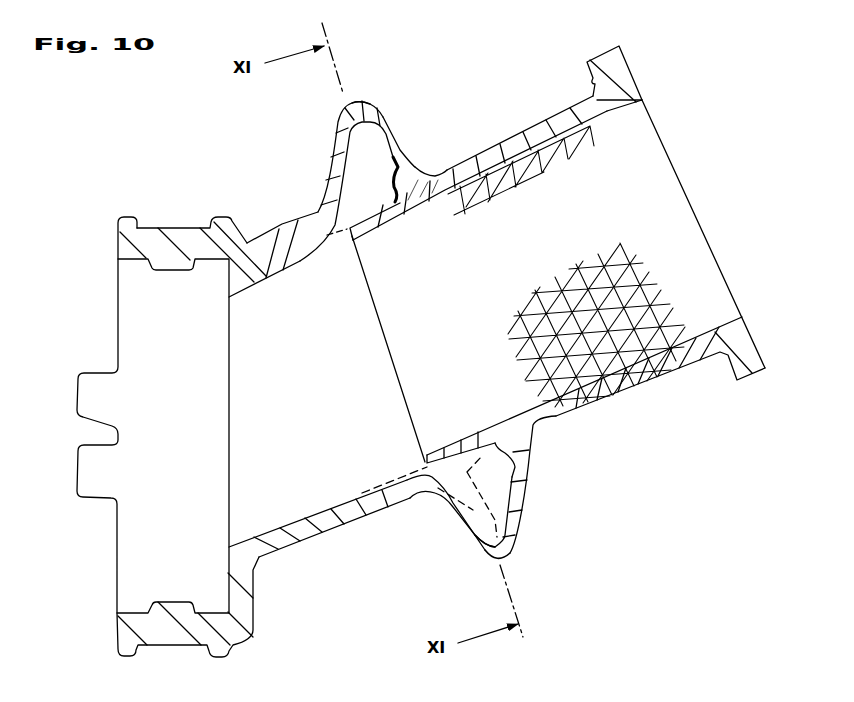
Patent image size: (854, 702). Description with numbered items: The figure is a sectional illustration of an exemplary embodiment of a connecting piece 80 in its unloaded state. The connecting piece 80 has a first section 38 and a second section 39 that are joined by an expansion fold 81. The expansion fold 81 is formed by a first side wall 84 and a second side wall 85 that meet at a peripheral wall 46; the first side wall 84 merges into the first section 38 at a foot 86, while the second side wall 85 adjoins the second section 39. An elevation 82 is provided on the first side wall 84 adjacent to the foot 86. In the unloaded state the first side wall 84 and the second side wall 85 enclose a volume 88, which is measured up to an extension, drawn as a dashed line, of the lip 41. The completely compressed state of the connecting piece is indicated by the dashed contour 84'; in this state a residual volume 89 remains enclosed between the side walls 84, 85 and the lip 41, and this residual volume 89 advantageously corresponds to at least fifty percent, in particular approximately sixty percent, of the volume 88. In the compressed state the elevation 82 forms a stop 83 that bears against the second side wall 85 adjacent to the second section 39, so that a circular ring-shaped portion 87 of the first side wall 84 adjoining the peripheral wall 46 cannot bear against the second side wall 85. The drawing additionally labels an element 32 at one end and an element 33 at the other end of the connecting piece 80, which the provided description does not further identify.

The flange 32 is at (664, 93).
The hub 33 is at (106, 231).
The first section 38 is at (512, 140).
The second section 39 is at (287, 247).
The lip 41 is at (370, 230).
The peripheral wall 46 is at (357, 112).
The connecting piece 80 is at (666, 520).
The expansion fold 81 is at (541, 553).
The elevation 82 is at (504, 452).
The stop 83 is at (437, 490).
The first side wall 84 is at (401, 144).
The completely compressed state 84' is at (506, 496).
The second side wall 85 is at (337, 157).
The foot 86 is at (423, 173).
The circular ring-shaped portion 87 is at (473, 500).
The volume 88 is at (355, 193).
The residual volume 89 is at (483, 539).